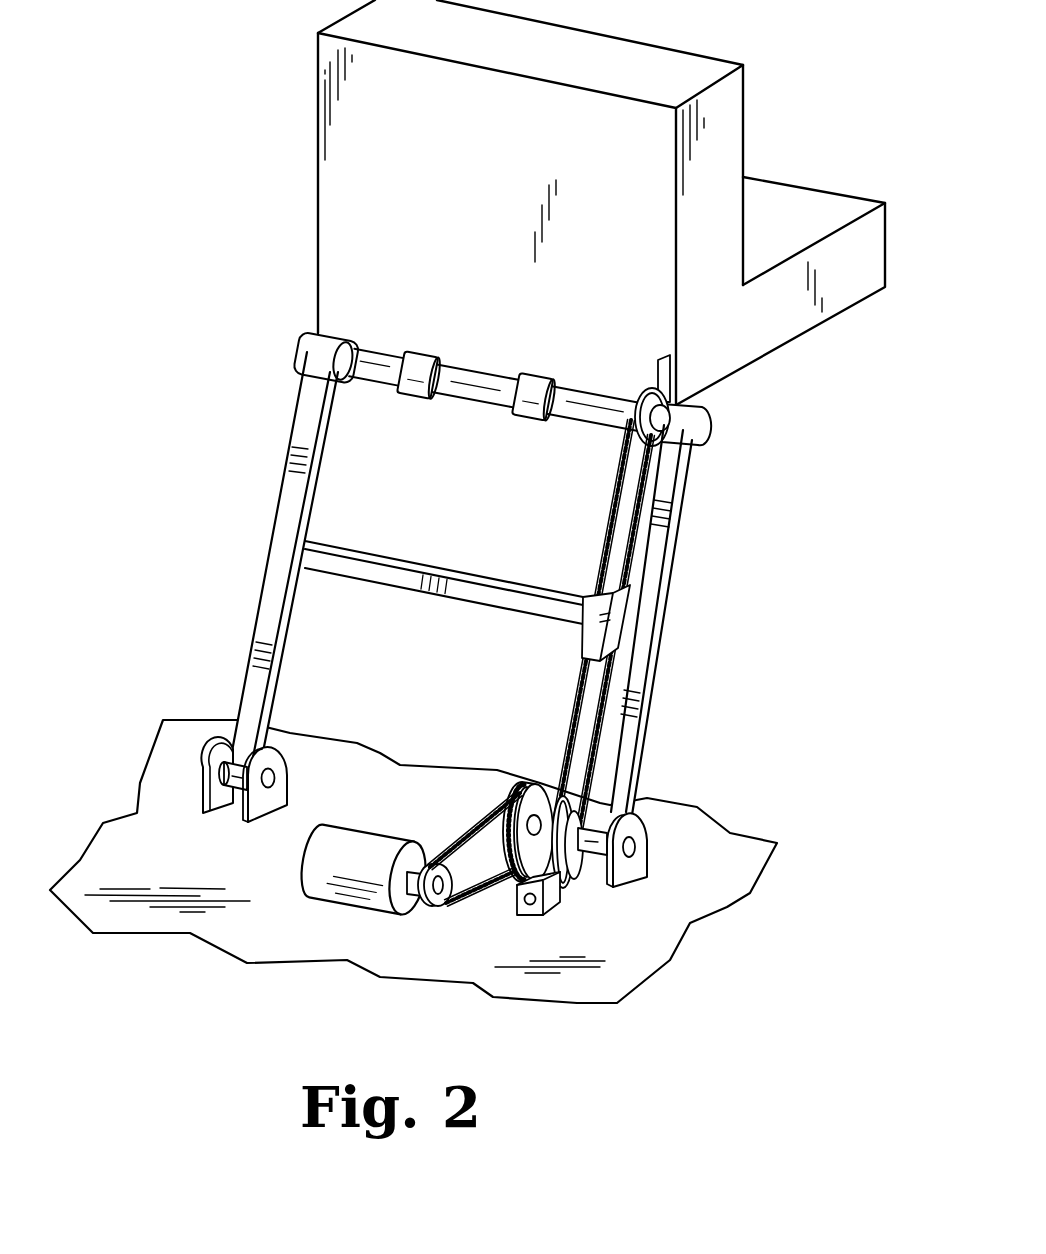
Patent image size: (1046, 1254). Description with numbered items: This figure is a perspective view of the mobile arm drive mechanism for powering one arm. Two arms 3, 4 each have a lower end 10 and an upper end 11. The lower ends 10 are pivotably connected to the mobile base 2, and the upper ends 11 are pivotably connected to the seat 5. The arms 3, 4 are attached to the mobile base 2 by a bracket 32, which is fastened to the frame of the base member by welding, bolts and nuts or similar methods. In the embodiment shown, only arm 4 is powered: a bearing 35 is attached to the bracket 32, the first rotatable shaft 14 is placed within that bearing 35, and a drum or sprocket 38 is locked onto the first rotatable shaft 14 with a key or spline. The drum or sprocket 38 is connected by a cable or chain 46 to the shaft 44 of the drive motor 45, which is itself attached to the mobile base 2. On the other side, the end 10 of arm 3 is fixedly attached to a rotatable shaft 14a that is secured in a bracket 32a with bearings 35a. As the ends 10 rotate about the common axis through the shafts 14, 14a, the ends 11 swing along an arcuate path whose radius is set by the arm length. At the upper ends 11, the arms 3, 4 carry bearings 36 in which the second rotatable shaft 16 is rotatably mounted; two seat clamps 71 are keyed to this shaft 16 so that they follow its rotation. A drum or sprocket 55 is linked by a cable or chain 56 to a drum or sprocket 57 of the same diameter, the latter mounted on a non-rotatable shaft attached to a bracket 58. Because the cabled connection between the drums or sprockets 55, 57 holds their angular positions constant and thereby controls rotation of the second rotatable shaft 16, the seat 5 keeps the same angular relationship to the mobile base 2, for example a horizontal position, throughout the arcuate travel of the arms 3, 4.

The mobile base 2 is at (292, 935).
The arm 3 is at (268, 595).
The arm 4 is at (642, 616).
The seat 5 is at (347, 241).
The end of arm 10 is at (246, 725).
The end of arm 11 is at (310, 398).
The first rotatable shaft 14 is at (543, 820).
The rotatable shaft 14a is at (232, 783).
The second rotatable shaft 16 is at (592, 406).
The bracket 32 is at (632, 866).
The bracket 32a is at (203, 767).
The bearing 35 is at (637, 848).
The bearings 35a is at (272, 776).
The bearings 36 is at (300, 347).
The drum or sprocket 38 is at (527, 810).
The shaft of the drive motor 44 is at (407, 893).
The drive motor 45 is at (317, 850).
The cable or chain 46 is at (470, 827).
The drum or sprocket 55 is at (641, 398).
The cable or chain 56 is at (605, 514).
The drum or sprocket 57 is at (593, 813).
The bracket 58 is at (580, 866).
The seat clamps 71 is at (418, 397).